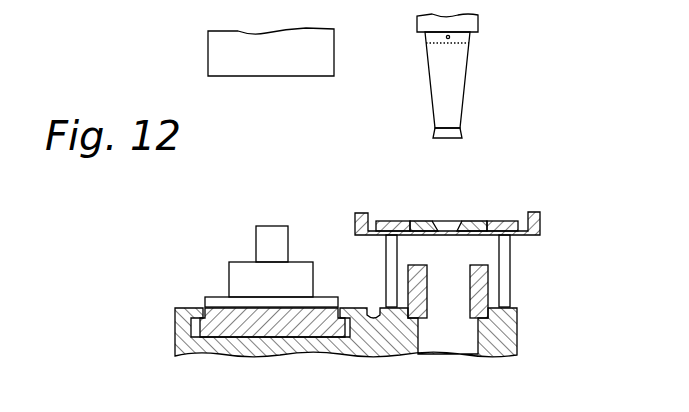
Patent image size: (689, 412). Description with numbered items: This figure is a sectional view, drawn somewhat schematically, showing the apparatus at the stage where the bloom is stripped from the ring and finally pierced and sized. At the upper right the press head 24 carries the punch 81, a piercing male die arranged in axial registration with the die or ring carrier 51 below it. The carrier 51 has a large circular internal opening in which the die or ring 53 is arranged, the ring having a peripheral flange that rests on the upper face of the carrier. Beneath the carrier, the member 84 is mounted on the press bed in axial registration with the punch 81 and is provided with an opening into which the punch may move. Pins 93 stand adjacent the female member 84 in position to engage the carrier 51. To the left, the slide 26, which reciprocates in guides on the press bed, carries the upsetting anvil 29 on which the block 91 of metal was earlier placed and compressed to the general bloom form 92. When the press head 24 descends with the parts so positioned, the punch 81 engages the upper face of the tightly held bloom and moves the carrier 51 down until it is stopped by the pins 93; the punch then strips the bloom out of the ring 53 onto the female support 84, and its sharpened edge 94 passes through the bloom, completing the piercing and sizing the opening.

The press head 24 is at (318, 52).
The slide 26 is at (252, 328).
The upsetting anvil 29 is at (245, 278).
The die or ring carrier 51 is at (538, 213).
The die or ring 53 is at (498, 221).
The punch 81 is at (457, 67).
The member 84 is at (483, 292).
The block 91 is at (268, 251).
The bloom form 92 is at (423, 221).
The pins 93 is at (510, 252).
The sharpened edge 94 is at (463, 135).